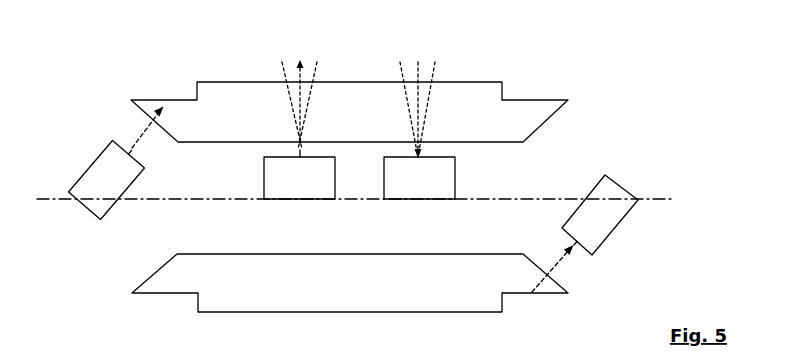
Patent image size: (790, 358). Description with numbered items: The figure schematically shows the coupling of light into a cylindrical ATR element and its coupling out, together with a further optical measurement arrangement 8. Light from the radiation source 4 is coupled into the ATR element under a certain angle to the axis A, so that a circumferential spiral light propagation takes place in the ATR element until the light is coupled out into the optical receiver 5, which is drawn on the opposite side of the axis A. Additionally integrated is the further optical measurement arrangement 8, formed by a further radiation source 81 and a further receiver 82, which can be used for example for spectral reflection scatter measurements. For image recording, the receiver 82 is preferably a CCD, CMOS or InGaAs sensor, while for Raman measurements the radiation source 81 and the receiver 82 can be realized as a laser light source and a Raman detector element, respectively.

The axis A is at (342, 199).
The radiation source 4 is at (102, 173).
The optical receiver 5 is at (607, 220).
The further optical measurement arrangement 8 is at (228, 98).
The further radiation source 81 is at (282, 157).
The further receiver 82 is at (435, 157).